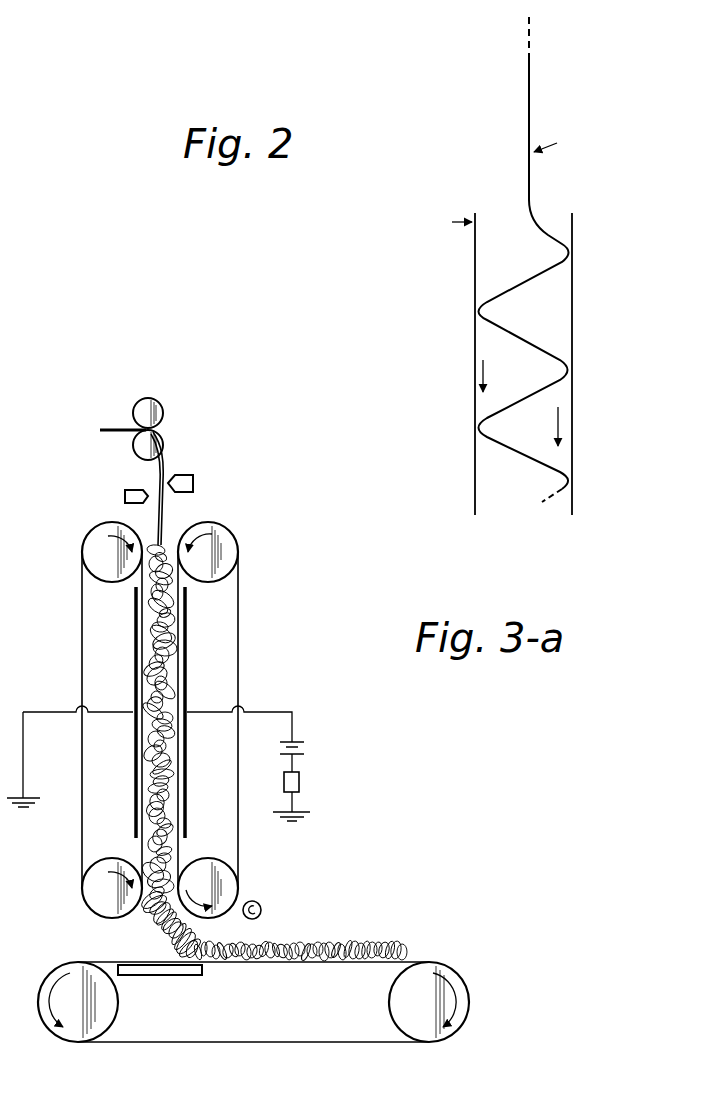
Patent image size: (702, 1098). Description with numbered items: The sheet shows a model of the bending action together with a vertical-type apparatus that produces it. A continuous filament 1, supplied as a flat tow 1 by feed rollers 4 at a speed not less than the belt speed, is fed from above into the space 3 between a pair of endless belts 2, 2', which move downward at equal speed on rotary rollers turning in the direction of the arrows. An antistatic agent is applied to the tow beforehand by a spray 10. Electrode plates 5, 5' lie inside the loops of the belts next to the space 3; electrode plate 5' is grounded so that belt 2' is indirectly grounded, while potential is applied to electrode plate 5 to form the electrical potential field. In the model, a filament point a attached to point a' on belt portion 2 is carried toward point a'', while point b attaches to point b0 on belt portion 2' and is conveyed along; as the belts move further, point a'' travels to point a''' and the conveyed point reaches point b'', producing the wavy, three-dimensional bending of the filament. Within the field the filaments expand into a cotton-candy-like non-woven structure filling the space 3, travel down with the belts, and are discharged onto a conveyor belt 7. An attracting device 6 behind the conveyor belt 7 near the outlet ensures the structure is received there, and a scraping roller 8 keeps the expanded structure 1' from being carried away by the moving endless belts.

In FIG. 2, the continuous filament 1 is at (178, 488).
In FIG. 3-a, the continuous filament 1 is at (524, 259).
In FIG. 2, the deposited fibrous mat 1' is at (273, 924).
In FIG. 2, the endless belt 2 is at (229, 720).
In FIG. 3-a, the endless belt 2 is at (588, 364).
In FIG. 2, the endless belt 2' is at (95, 720).
In FIG. 3-a, the endless belt 2' is at (454, 364).
In FIG. 2, the electrical potential field space 3 is at (180, 628).
In FIG. 3-a, the electrical potential field space 3 is at (529, 260).
In FIG. 2, the feed rollers 4 is at (162, 430).
In FIG. 2, the electrode plate 5 is at (231, 720).
In FIG. 2, the electrode plate 5' is at (91, 720).
In FIG. 2, the attracting device 6 is at (185, 976).
In FIG. 2, the conveyor belt 7 is at (307, 1042).
In FIG. 2, the scraping roller 8 is at (261, 905).
In FIG. 2, the spray 10 is at (125, 496).
In FIG. 3-a, the point a is at (520, 71).
In FIG. 3-a, the point b is at (507, 229).
In FIG. 3-a, the point b0 is at (477, 223).
In FIG. 3-a, the point a' is at (586, 250).
In FIG. 3-a, the point a'' is at (586, 368).
In FIG. 3-a, the point b'' is at (467, 423).
In FIG. 3-a, the point a''' is at (588, 476).